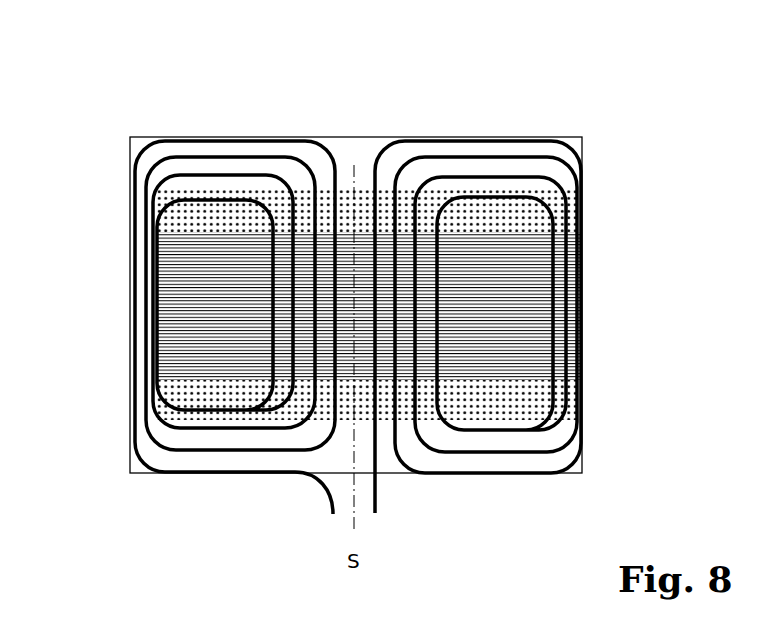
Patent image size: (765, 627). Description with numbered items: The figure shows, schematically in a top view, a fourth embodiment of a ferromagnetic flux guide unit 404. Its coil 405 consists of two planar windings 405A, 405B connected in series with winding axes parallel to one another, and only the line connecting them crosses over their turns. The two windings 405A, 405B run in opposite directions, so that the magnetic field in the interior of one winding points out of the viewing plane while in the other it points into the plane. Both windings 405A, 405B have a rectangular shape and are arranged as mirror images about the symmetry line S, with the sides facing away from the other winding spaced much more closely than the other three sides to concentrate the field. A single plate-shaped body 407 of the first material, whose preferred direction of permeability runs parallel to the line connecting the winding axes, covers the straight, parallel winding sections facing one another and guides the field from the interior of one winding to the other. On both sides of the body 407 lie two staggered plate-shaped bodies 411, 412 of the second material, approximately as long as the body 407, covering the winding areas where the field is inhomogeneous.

The ferromagnetic flux guide unit 404 is at (602, 105).
The coil 405 is at (358, 284).
The first winding 405A is at (232, 152).
The second winding 405B is at (476, 150).
The plate-shaped body made of the first material 407 is at (175, 305).
The plate-shaped body made of the second material 411 is at (152, 214).
The plate-shaped body made of the second material 412 is at (172, 394).